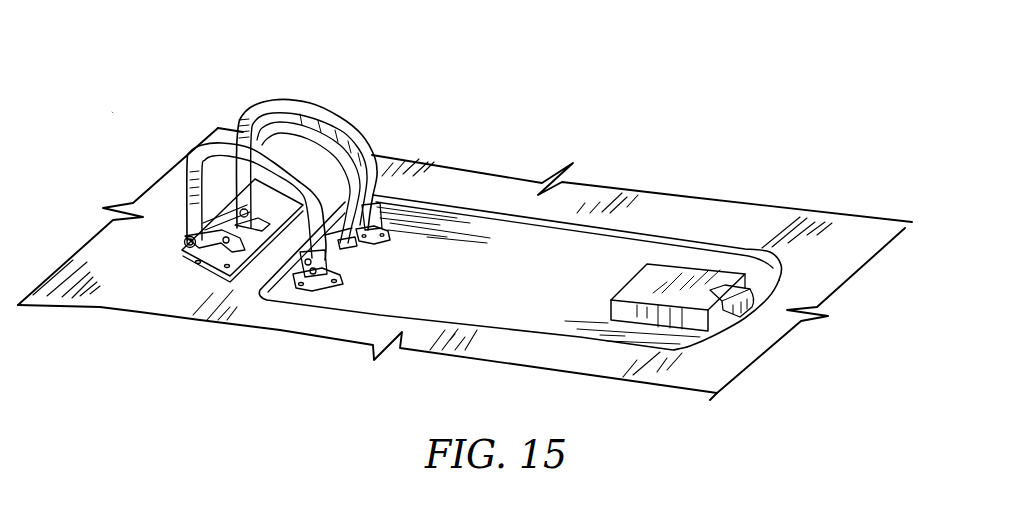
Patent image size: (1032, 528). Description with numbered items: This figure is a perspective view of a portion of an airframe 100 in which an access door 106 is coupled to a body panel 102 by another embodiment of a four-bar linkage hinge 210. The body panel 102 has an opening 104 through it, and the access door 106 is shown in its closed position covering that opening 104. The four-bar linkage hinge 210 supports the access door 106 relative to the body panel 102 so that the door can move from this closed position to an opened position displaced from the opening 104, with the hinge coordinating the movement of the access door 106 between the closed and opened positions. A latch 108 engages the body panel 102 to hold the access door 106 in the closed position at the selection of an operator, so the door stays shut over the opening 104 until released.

The airframe 100 is at (127, 120).
The body panel 102 is at (847, 254).
The opening 104 is at (647, 234).
The access door 106 is at (510, 249).
The latch 108 is at (765, 292).
The four-bar linkage hinge 210 is at (317, 95).